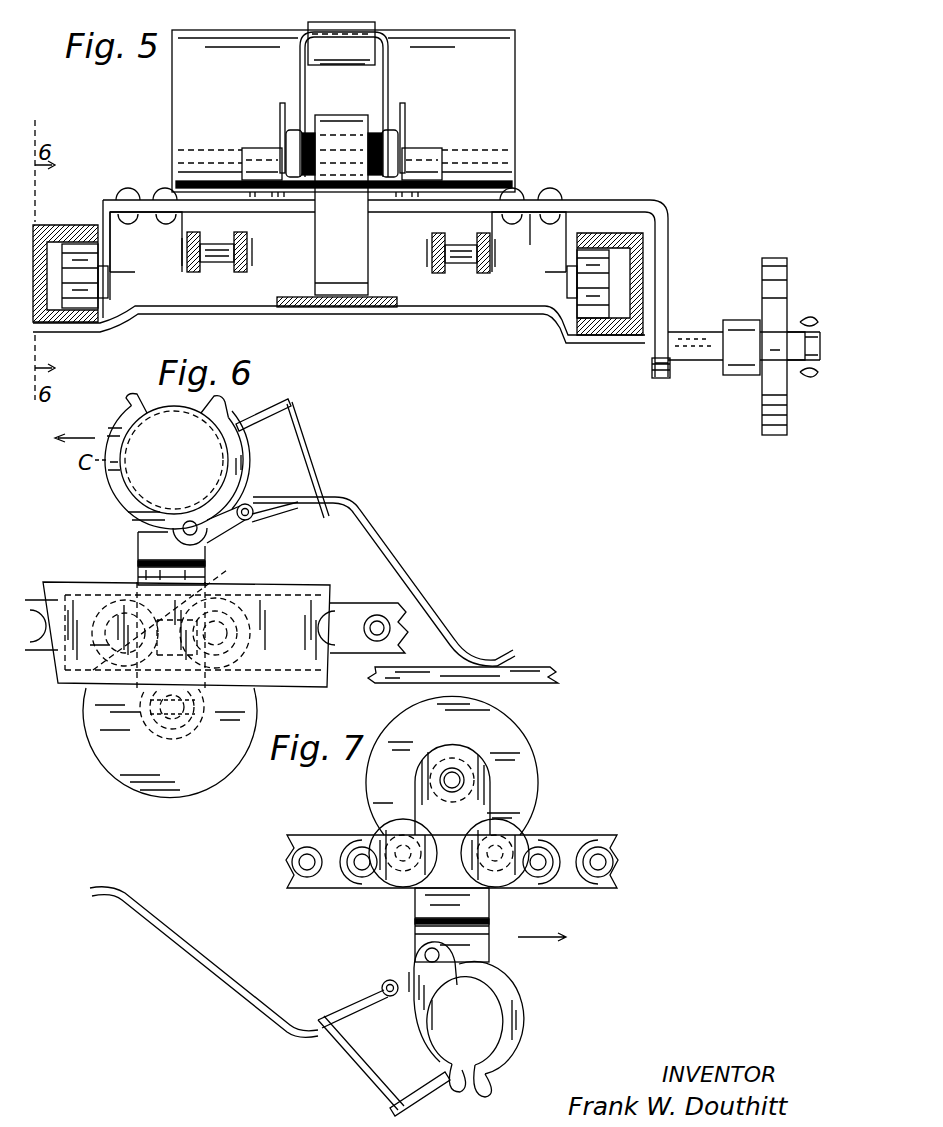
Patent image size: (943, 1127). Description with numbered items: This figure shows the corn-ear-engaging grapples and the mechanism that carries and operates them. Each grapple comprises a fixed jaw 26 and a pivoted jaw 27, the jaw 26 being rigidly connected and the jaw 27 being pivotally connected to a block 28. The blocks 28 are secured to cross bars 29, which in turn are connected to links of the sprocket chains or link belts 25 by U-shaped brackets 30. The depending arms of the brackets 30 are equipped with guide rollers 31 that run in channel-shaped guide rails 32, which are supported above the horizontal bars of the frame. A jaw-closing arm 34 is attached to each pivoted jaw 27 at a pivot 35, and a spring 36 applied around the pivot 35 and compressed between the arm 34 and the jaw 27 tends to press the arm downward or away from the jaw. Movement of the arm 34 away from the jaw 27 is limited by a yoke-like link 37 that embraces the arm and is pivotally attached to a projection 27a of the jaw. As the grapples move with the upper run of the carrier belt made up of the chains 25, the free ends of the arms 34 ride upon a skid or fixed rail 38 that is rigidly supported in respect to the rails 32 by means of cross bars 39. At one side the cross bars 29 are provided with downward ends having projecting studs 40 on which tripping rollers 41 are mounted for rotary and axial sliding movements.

In FIG. 5, the sprocket chains or link belts 25 is at (222, 263).
In FIG. 6, the sprocket chains or link belts 25 is at (348, 605).
In FIG. 7, the sprocket chains or link belts 25 is at (318, 838).
In FIG. 5, the jaw 26 is at (257, 157).
In FIG. 6, the jaw 26 is at (112, 492).
In FIG. 7, the jaw 26 is at (520, 1008).
In FIG. 5, the pivoted jaw 27 is at (500, 132).
In FIG. 6, the pivoted jaw 27 is at (236, 479).
In FIG. 7, the pivoted jaw 27 is at (424, 1022).
In FIG. 5, the projection 27a is at (323, 55).
In FIG. 6, the projection 27a is at (290, 396).
In FIG. 7, the projection 27a is at (393, 1108).
In FIG. 5, the block 28 is at (403, 212).
In FIG. 6, the block 28 is at (144, 554).
In FIG. 7, the block 28 is at (414, 912).
In FIG. 5, the cross bar 29 is at (302, 212).
In FIG. 5, the U-shaped bracket 30 is at (152, 213).
In FIG. 5, the guide roller 31 is at (80, 250).
In FIG. 6, the guide roller 31 is at (219, 593).
In FIG. 7, the guide roller 31 is at (420, 840).
In FIG. 5, the channel-shaped guide rail 32 is at (108, 322).
In FIG. 6, the channel-shaped guide rail 32 is at (292, 590).
In FIG. 5, the jaw-closing arm 34 is at (327, 258).
In FIG. 6, the jaw-closing arm 34 is at (384, 548).
In FIG. 7, the jaw-closing arm 34 is at (257, 1007).
In FIG. 5, the pivot 35 is at (413, 148).
In FIG. 6, the pivot 35 is at (251, 507).
In FIG. 7, the pivot 35 is at (384, 984).
In FIG. 5, the spring 36 is at (405, 128).
In FIG. 6, the spring 36 is at (248, 477).
In FIG. 7, the spring 36 is at (398, 1013).
In FIG. 5, the yoke-like link 37 is at (390, 77).
In FIG. 6, the yoke-like link 37 is at (297, 433).
In FIG. 7, the yoke-like link 37 is at (367, 1068).
In FIG. 5, the skid or fixed rail 38 is at (395, 307).
In FIG. 6, the skid or fixed rail 38 is at (538, 672).
In FIG. 5, the cross bar 39 is at (550, 313).
In FIG. 5, the projecting stud 40 is at (685, 337).
In FIG. 6, the projecting stud 40 is at (150, 708).
In FIG. 7, the projecting stud 40 is at (440, 780).
In FIG. 5, the tripping roller 41 is at (760, 413).
In FIG. 6, the tripping roller 41 is at (250, 712).
In FIG. 7, the tripping roller 41 is at (528, 786).